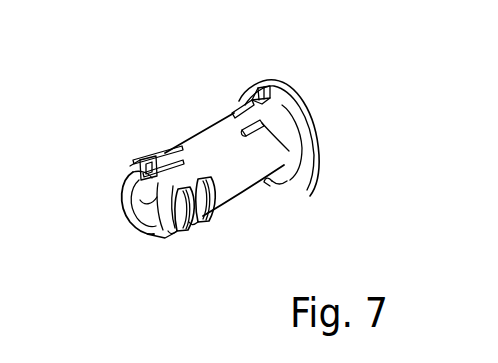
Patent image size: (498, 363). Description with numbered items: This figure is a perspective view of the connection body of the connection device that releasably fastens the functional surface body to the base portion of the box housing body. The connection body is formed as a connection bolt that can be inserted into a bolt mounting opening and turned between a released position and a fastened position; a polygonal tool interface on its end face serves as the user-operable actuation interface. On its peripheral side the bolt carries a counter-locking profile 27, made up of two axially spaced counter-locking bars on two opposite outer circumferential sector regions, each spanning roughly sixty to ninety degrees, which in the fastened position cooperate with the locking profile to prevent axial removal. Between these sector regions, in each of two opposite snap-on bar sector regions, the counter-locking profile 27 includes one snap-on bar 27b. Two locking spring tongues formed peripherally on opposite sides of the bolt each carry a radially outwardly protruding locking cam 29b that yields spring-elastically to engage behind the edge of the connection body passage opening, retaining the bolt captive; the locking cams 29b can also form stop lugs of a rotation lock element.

The counter-locking profile 27 is at (147, 155).
The snap-on bar 27b is at (137, 170).
The locking cam 29b is at (266, 100).